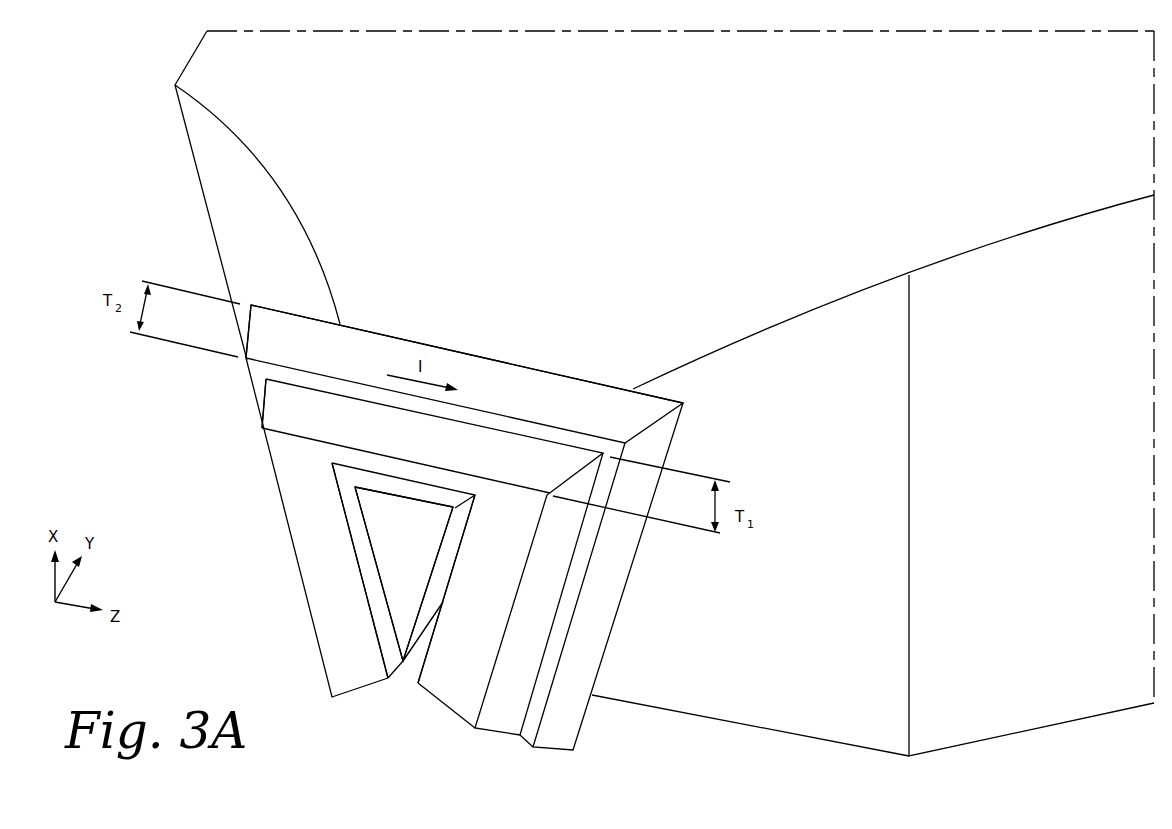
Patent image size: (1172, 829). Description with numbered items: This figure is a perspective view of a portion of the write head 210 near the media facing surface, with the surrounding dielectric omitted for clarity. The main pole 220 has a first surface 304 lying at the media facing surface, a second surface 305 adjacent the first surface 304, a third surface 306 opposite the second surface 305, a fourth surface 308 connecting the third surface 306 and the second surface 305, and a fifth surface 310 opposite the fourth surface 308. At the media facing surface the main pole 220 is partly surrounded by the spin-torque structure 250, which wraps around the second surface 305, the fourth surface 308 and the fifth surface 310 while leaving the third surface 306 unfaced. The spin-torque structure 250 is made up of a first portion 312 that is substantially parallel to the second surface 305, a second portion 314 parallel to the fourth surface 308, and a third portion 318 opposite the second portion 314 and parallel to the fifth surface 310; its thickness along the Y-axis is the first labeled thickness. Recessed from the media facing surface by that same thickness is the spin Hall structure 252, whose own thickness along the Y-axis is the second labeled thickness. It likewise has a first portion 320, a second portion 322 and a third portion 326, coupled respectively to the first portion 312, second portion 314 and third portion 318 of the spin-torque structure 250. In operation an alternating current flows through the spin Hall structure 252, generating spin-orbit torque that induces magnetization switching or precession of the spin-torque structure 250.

The write head 210 is at (188, 243).
The spin-torque structure 250 is at (308, 407).
The spin Hall structure 252 is at (367, 348).
The first portion of the spin Hall structure 320 is at (502, 373).
The first portion of the spin-torque structure 312 is at (535, 457).
The second portion of the spin Hall structure 322 is at (250, 377).
The second portion of the spin-torque structure 314 is at (330, 636).
The first surface 304 is at (420, 551).
The second surface 305 is at (380, 486).
The fourth surface 308 is at (370, 553).
The fifth surface 310 is at (447, 560).
The main pole 220 is at (400, 575).
The third surface 306 is at (403, 661).
The third portion of the spin-torque structure 318 is at (560, 542).
The third portion of the spin Hall structure 326 is at (598, 632).